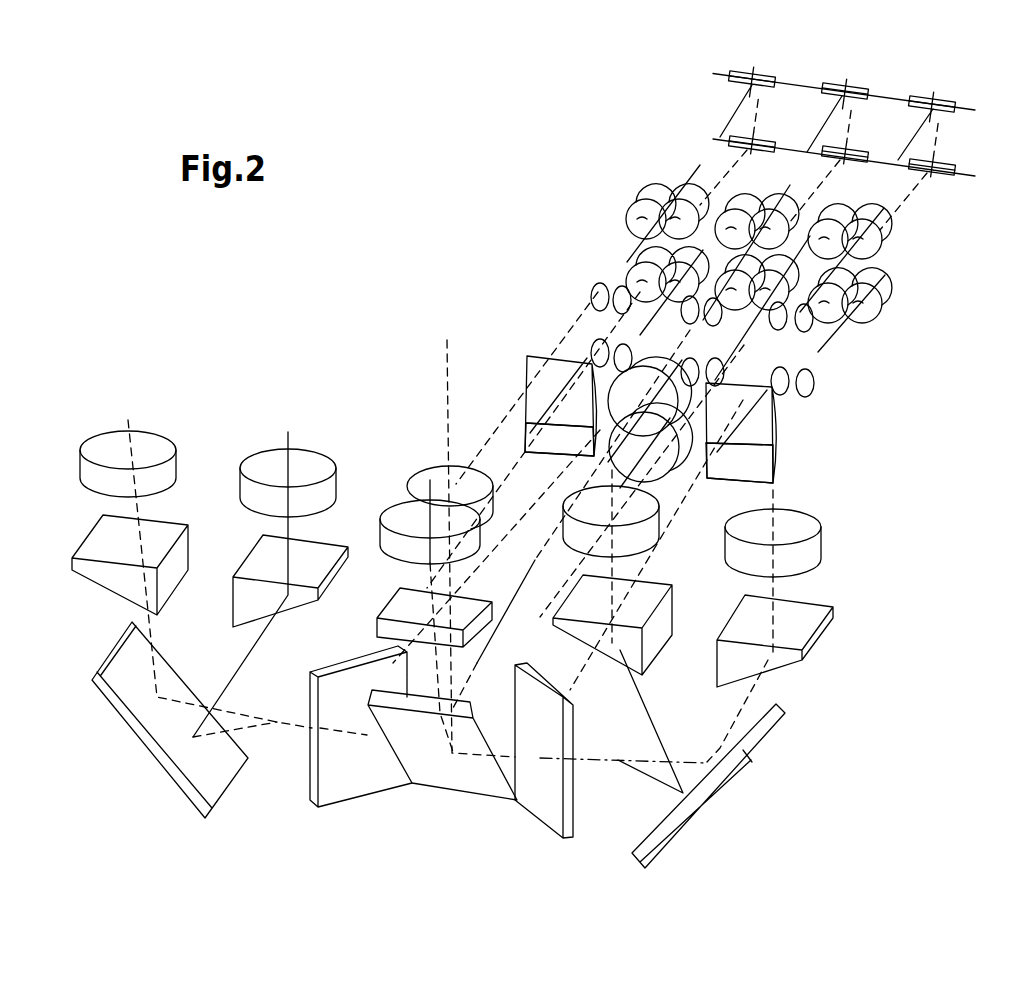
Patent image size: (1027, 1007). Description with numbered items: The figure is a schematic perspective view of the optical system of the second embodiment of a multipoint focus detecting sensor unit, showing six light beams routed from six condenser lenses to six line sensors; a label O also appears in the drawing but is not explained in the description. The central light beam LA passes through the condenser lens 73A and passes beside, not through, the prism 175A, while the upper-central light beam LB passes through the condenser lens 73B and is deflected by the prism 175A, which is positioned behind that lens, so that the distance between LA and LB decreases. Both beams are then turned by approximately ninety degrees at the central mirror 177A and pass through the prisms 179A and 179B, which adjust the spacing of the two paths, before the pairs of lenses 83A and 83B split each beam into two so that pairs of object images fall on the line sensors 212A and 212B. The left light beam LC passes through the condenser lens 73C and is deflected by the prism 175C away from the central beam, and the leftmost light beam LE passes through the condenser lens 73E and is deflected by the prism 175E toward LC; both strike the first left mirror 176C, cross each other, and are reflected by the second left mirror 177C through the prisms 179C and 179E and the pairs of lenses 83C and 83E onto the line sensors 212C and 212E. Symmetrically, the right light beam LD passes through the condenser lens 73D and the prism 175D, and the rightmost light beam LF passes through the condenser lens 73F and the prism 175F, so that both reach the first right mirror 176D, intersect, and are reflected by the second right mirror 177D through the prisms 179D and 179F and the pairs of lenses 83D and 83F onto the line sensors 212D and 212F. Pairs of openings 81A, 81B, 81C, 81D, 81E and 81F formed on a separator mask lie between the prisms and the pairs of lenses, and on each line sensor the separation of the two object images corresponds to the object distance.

The line sensor 212A is at (856, 152).
The line sensor 212B is at (847, 89).
The line sensor 212C is at (936, 102).
The line sensor 212D is at (752, 77).
The line sensor 212E is at (950, 165).
The line sensor 212F is at (768, 143).
The pair of lenses 83A is at (733, 270).
The pair of lenses 83B is at (730, 210).
The pair of lenses 83C is at (860, 240).
The pair of lenses 83D is at (645, 208).
The pair of lenses 83E is at (875, 296).
The pair of lenses 83F is at (640, 268).
The pair of openings 81A is at (745, 343).
The pair of openings 81B is at (705, 320).
The pair of openings 81C is at (812, 326).
The pair of openings 81D is at (600, 284).
The pair of openings 81E is at (812, 386).
The pair of openings 81F is at (598, 342).
The prism 179A is at (662, 476).
The prism 179B is at (643, 378).
The prism 179C is at (752, 418).
The prism 179D is at (540, 378).
The prism 179E is at (760, 468).
The prism 179F is at (540, 436).
The condenser lens 73A is at (420, 480).
The condenser lens 73B is at (408, 525).
The condenser lens 73C is at (592, 518).
The condenser lens 73D is at (268, 470).
The condenser lens 73E is at (825, 527).
The condenser lens 73F is at (105, 455).
The prism 175A is at (385, 608).
The prism 175C is at (657, 645).
The prism 175D is at (255, 562).
The prism 175E is at (803, 622).
The prism 175F is at (100, 550).
The first left mirror 176C is at (637, 866).
The first right mirror 176D is at (228, 777).
The central mirror 177A is at (455, 785).
The second left mirror 177C is at (534, 800).
The second right mirror 177D is at (370, 775).
The optical axis O is at (449, 400).
The central light beam LA is at (449, 430).
The upper-central light beam LB is at (410, 490).
The left light beam LC is at (605, 483).
The right light beam LD is at (292, 432).
The leftmost light beam LE is at (778, 583).
The rightmost light beam LF is at (130, 417).